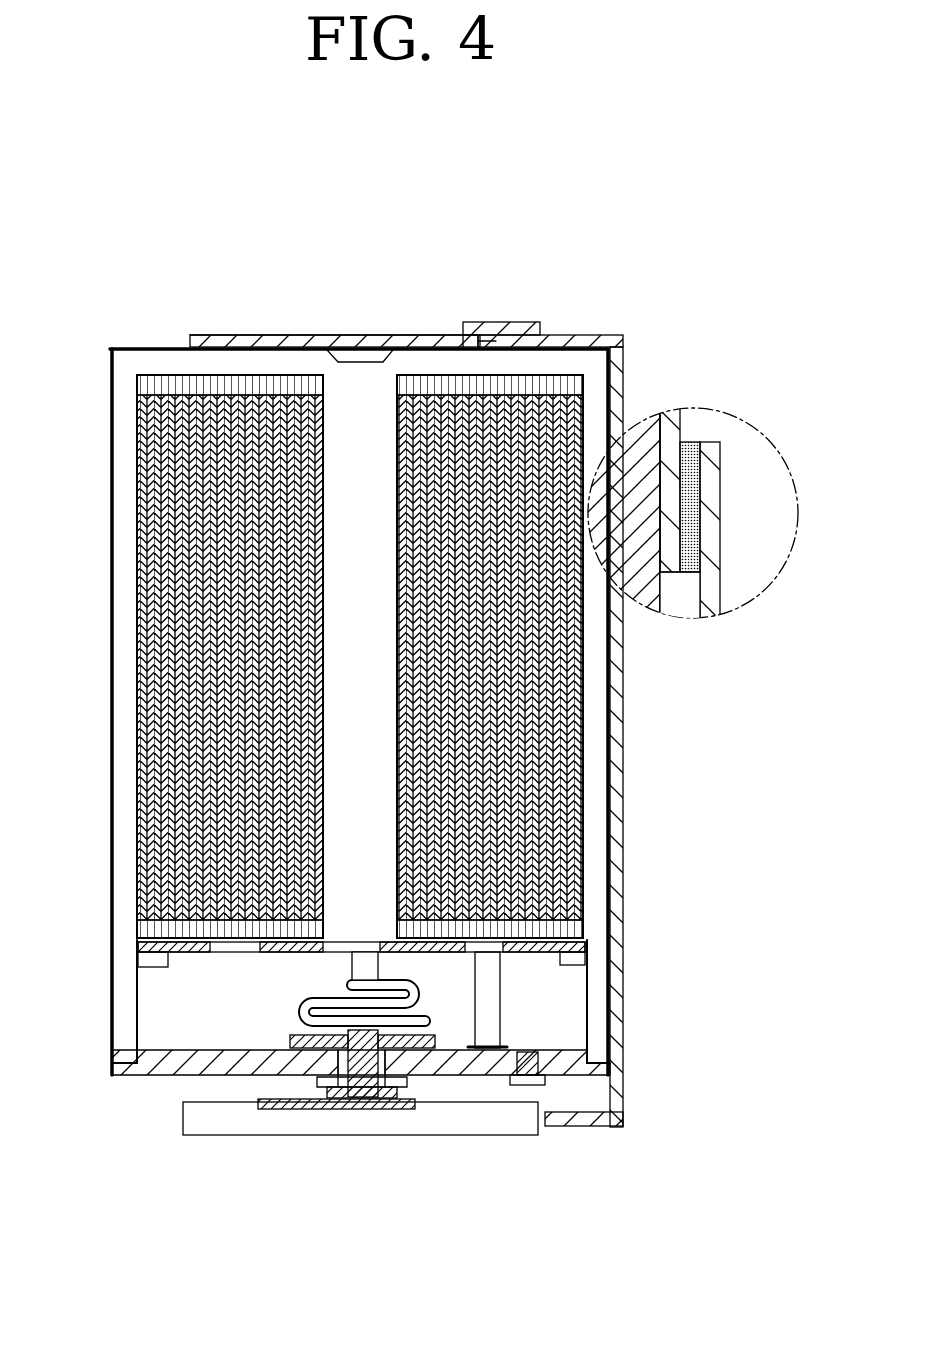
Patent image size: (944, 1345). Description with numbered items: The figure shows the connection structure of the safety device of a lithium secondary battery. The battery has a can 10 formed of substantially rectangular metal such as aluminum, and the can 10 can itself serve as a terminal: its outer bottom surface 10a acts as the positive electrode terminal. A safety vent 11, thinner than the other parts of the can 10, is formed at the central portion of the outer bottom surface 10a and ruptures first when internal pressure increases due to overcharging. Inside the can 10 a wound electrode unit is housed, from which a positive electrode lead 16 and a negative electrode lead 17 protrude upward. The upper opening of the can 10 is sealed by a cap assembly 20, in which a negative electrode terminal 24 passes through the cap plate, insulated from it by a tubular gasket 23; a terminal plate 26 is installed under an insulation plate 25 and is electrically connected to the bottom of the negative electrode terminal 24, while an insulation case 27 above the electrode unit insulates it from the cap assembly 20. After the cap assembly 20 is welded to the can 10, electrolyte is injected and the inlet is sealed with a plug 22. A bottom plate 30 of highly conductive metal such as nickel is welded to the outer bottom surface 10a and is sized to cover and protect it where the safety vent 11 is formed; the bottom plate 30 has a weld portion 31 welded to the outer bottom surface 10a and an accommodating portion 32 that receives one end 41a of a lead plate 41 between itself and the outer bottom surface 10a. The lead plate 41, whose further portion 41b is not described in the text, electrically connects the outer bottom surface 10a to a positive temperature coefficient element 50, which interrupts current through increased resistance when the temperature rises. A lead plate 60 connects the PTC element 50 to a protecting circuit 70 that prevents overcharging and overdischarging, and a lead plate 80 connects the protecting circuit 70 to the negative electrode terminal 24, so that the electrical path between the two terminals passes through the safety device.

The can 10 is at (118, 683).
The outer bottom surface of the can 10a is at (152, 348).
The safety vent 11 is at (352, 350).
The positive electrode lead 16 is at (490, 993).
The negative electrode lead 17 is at (300, 1010).
The cap assembly 20 is at (112, 1068).
The plug 22 is at (532, 1090).
The tubular gasket 23 is at (323, 1108).
The negative electrode terminal 24 is at (388, 1108).
The insulation plate 25 is at (290, 1040).
The terminal plate 26 is at (423, 1027).
The insulation case 27 is at (138, 946).
The bottom plate 30 is at (427, 303).
The weld portion 31 is at (233, 340).
The accommodating portion 32 is at (525, 330).
The lead plate 41 is at (617, 340).
The end of the lead plate 41a is at (488, 340).
The cover wall 41b is at (672, 583).
The positive temperature coefficient element 50 is at (690, 442).
The lead plate 60 is at (625, 820).
The protecting circuit 70 is at (237, 1122).
The lead plate 80 is at (273, 1107).